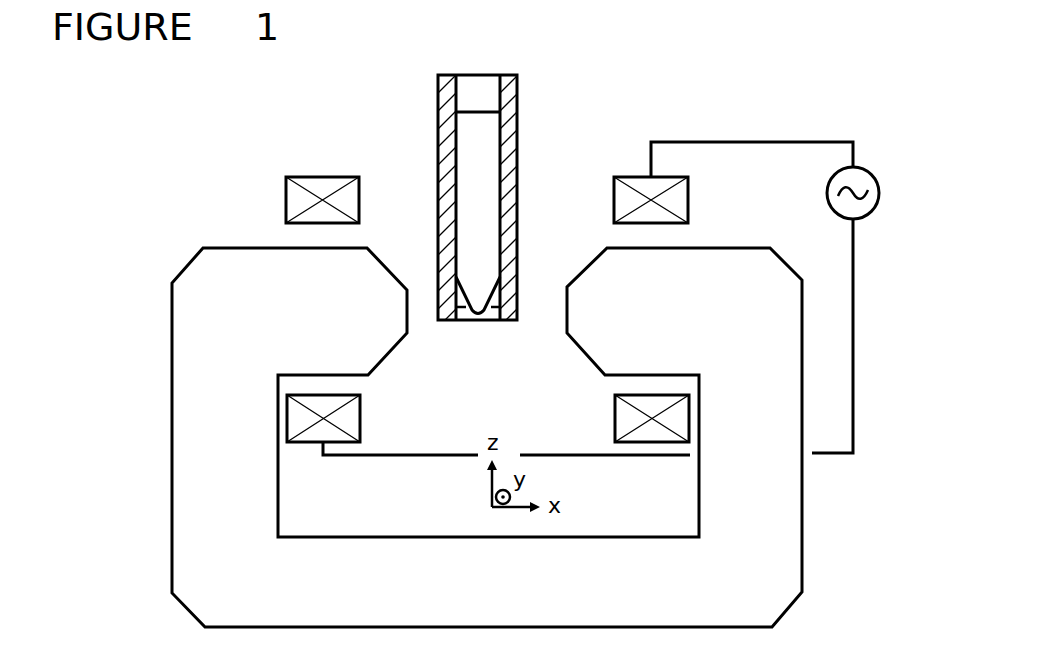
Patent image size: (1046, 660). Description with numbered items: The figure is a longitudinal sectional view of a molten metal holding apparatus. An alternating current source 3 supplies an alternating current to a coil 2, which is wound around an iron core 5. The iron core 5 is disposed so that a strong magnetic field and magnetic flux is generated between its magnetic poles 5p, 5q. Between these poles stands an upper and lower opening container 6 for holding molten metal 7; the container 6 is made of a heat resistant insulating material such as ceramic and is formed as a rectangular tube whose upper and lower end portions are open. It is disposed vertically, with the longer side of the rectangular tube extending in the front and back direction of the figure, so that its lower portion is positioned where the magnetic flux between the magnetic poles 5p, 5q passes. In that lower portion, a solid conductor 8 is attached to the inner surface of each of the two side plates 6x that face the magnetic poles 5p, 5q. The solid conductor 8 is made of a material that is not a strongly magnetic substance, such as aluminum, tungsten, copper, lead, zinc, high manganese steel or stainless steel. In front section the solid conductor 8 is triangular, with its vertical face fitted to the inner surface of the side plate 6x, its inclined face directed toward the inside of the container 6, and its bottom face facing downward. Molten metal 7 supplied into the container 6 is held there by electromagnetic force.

The coil 2 is at (324, 183).
The alternating current source 3 is at (860, 178).
The iron core 5 is at (793, 517).
The magnetic pole 5p is at (352, 289).
The magnetic pole 5q is at (611, 289).
The upper and lower opening container 6 is at (438, 140).
The side plate 6x is at (517, 162).
The molten metal 7 is at (482, 128).
The solid conductor 8 is at (458, 308).